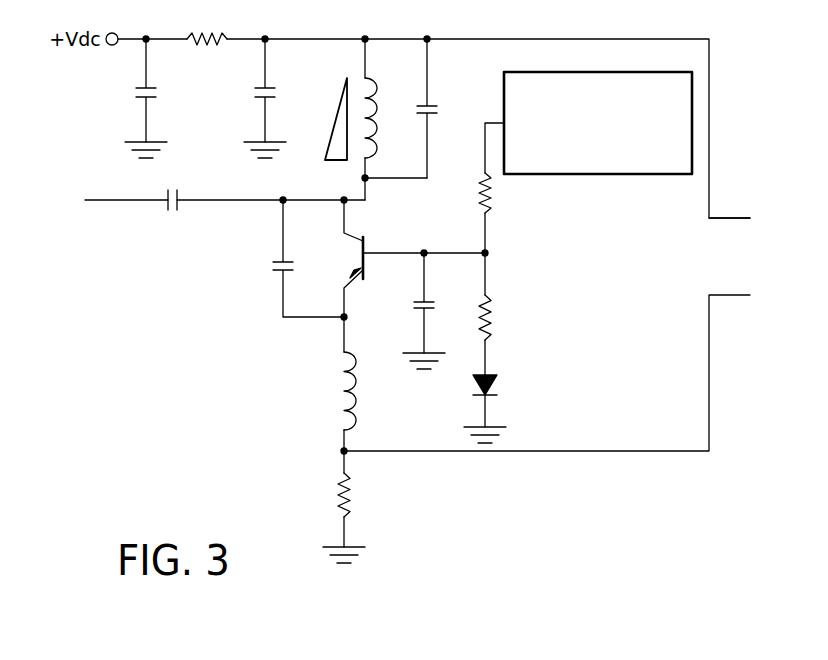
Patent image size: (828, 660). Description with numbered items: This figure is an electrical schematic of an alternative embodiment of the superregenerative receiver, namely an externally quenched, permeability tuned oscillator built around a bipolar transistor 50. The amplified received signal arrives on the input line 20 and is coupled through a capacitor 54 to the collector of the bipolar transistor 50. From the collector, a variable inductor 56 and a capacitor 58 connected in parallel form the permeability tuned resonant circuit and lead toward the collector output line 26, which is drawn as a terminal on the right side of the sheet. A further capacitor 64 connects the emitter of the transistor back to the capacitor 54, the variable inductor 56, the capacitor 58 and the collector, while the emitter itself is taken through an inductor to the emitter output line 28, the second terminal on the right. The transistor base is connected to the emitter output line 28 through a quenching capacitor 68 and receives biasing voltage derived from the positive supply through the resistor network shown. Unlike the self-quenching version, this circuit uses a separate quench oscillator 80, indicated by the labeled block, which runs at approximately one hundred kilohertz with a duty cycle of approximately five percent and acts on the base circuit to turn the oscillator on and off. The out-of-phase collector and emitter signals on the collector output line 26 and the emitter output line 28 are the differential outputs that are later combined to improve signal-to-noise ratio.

The input line 20 is at (120, 202).
The capacitor 54 is at (180, 194).
The variable inductor 56 is at (370, 98).
The capacitor 58 is at (432, 115).
The bipolar transistor 50 is at (372, 238).
The capacitor 64 is at (278, 275).
The quenching capacitor 68 is at (418, 312).
The quench oscillator 80 is at (652, 175).
The collector output line 26 is at (709, 153).
The emitter output line 28 is at (709, 358).